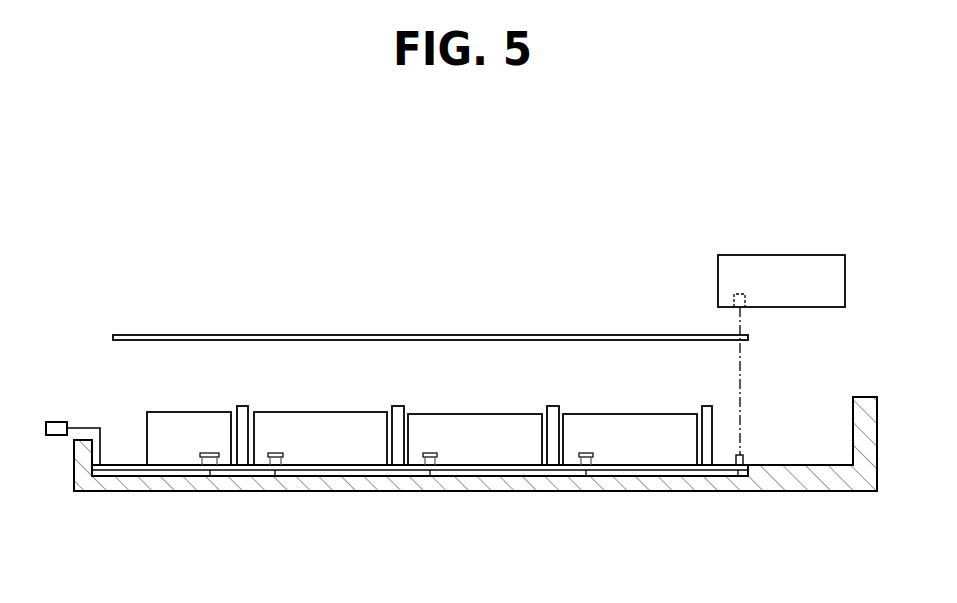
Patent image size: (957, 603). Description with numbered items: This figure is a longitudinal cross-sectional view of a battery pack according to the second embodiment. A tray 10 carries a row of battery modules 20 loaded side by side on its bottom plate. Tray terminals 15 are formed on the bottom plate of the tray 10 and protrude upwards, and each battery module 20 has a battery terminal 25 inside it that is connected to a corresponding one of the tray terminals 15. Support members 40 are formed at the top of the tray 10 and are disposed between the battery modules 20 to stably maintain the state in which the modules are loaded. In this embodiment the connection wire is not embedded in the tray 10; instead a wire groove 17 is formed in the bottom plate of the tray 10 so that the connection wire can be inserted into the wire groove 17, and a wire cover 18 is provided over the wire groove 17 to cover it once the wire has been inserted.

The tray 10 is at (329, 498).
The tray terminal 15 is at (273, 458).
The wire groove 17 is at (576, 476).
The wire cover 18 is at (458, 337).
The battery module 20 is at (629, 407).
The battery terminal 25 is at (742, 294).
The support member 40 is at (243, 408).